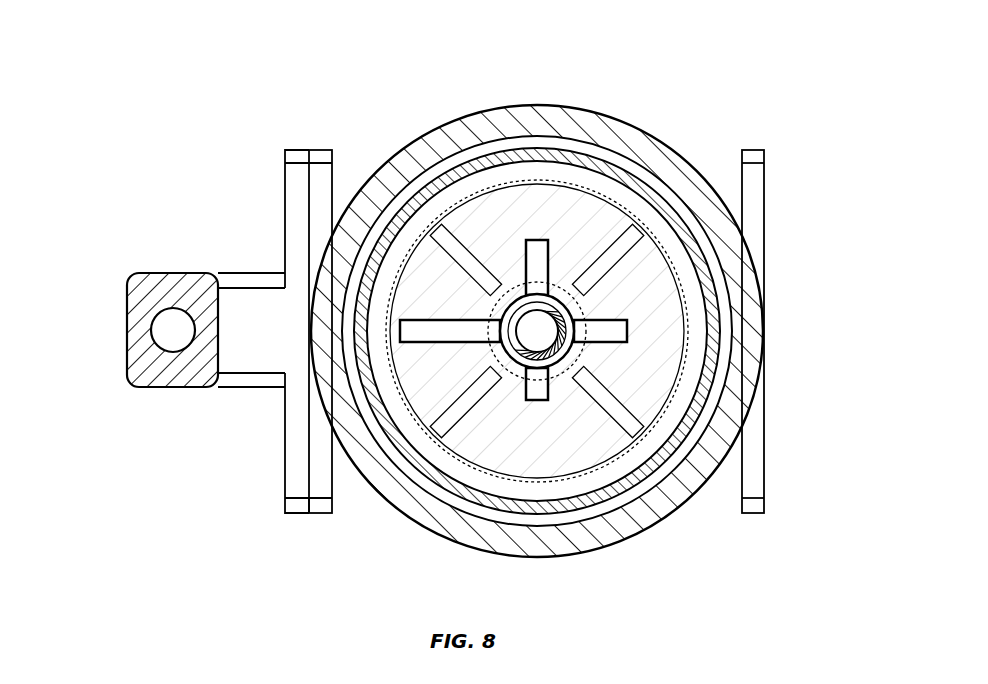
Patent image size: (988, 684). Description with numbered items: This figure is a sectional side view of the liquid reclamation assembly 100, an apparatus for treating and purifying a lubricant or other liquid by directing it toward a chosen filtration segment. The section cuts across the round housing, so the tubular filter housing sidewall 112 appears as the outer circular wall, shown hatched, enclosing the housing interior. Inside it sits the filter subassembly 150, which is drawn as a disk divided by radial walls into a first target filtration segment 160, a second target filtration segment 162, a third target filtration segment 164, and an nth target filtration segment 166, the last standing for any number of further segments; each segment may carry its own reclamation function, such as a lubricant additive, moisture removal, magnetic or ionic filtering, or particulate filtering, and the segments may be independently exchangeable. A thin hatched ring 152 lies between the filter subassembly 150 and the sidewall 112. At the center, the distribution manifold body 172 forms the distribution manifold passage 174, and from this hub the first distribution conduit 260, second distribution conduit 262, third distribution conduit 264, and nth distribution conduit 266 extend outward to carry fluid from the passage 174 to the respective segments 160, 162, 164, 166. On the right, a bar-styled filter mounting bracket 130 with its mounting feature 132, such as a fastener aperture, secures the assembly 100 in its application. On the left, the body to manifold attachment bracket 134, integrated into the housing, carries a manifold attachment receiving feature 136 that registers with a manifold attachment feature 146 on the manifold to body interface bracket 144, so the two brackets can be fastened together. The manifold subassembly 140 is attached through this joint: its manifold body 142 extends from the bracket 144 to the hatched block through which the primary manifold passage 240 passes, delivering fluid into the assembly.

The liquid reclamation assembly 100 is at (779, 81).
The tubular filter housing sidewall 112 is at (590, 270).
The filter mounting bracket 130 is at (750, 515).
The mounting feature 132 is at (766, 470).
The body to manifold attachment bracket 134 is at (318, 150).
The manifold attachment receiving feature 136 is at (315, 468).
The manifold subassembly 140 is at (113, 397).
The manifold body 142 is at (210, 390).
The manifold to body interface bracket 144 is at (297, 150).
The manifold attachment feature 146 is at (285, 470).
The filter subassembly 150 is at (613, 473).
The ring inner edge 152 is at (657, 503).
The first target filtration segment 160 is at (535, 327).
The second target filtration segment 162 is at (670, 341).
The third target filtration segment 164 is at (553, 446).
The nth target filtration segment 166 is at (453, 388).
The distribution manifold body 172 is at (620, 200).
The distribution manifold passage 174 is at (620, 375).
The primary manifold passage 240 is at (175, 306).
The first distribution conduit 260 is at (450, 152).
The second distribution conduit 262 is at (610, 317).
The third distribution conduit 264 is at (520, 397).
The nth distribution conduit 266 is at (447, 320).